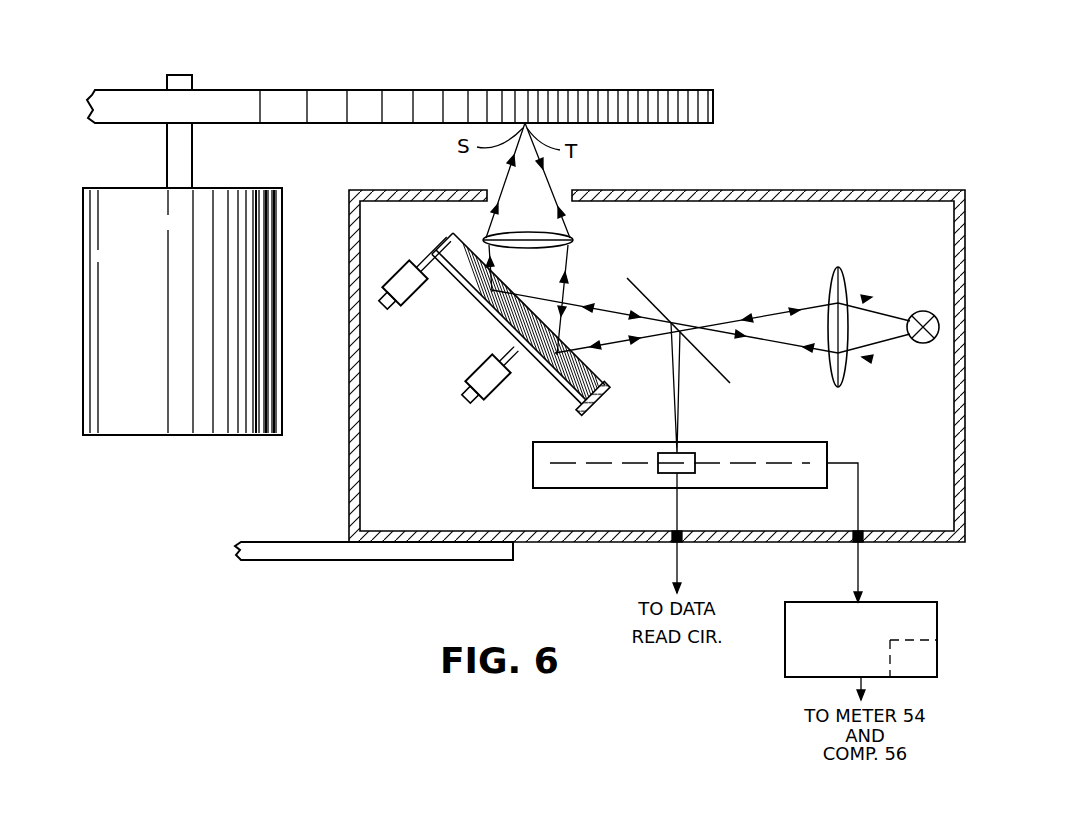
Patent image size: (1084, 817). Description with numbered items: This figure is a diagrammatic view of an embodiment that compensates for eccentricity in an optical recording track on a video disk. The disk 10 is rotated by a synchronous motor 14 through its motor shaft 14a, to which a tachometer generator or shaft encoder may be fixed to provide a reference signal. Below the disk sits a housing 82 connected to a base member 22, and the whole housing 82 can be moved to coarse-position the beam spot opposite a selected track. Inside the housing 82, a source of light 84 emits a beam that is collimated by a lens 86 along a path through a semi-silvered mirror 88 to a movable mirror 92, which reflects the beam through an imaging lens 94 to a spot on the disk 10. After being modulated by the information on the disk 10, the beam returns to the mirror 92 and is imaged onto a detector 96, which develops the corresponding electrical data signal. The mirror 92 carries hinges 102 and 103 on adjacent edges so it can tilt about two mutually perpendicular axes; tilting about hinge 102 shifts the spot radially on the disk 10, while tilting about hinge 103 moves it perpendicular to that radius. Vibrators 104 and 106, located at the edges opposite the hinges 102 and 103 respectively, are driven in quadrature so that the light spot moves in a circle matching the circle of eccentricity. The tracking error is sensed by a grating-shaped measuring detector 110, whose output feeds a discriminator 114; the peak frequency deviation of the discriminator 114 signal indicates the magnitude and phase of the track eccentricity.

The disk 10 is at (541, 90).
The synchronous motor 14 is at (183, 425).
The motor shaft 14a is at (131, 157).
The base member 22 is at (278, 553).
The housing 82 is at (760, 190).
The source of light 84 is at (921, 343).
The lens 86 is at (842, 272).
The semi-silvered mirror 88 is at (647, 288).
The movable mirror 92 is at (550, 331).
The imaging lens 94 is at (573, 246).
The detector 96 is at (668, 473).
The hinge 102 is at (585, 423).
The hinge 103 is at (591, 366).
The vibrator 104 is at (413, 298).
The vibrator 106 is at (500, 381).
The measuring detector 110 is at (680, 486).
The discriminator 114 is at (900, 602).